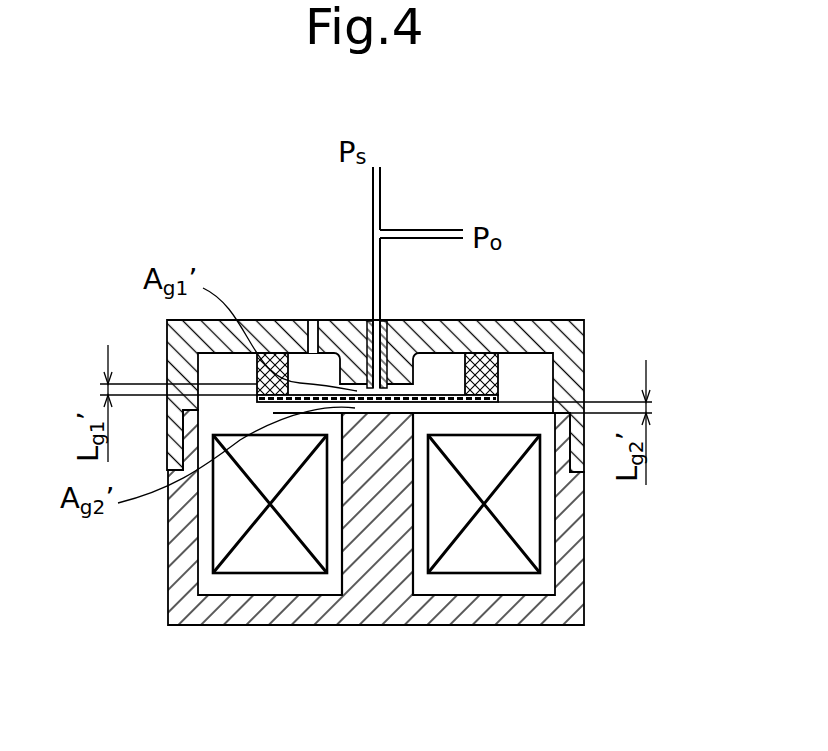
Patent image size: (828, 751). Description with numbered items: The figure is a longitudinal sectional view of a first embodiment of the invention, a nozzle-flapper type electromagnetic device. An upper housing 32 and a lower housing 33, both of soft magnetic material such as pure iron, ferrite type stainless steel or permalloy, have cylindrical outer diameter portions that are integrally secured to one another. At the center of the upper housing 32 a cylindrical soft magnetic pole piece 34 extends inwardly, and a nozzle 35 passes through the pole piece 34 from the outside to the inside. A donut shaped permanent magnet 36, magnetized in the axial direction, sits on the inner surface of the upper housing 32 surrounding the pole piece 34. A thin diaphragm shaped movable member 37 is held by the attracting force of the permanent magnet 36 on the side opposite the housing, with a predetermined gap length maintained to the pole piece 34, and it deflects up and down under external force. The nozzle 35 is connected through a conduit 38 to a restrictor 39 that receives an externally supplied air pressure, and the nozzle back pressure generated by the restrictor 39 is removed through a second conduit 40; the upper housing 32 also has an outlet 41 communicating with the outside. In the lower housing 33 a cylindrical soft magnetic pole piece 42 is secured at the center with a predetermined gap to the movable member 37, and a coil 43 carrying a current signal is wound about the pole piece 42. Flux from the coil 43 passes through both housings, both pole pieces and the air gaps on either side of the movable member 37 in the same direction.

The upper housing 32 is at (573, 347).
The lower housing 33 is at (575, 585).
The pole piece 34 is at (400, 366).
The nozzle 35 is at (352, 355).
The permanent magnet 36 is at (495, 370).
The movable member 37 is at (453, 402).
The conduit 38 is at (382, 287).
The restrictor 39 is at (380, 202).
The conduit 40 is at (422, 230).
The outlet 41 is at (313, 335).
The pole piece 42 is at (360, 507).
The coil 43 is at (487, 560).